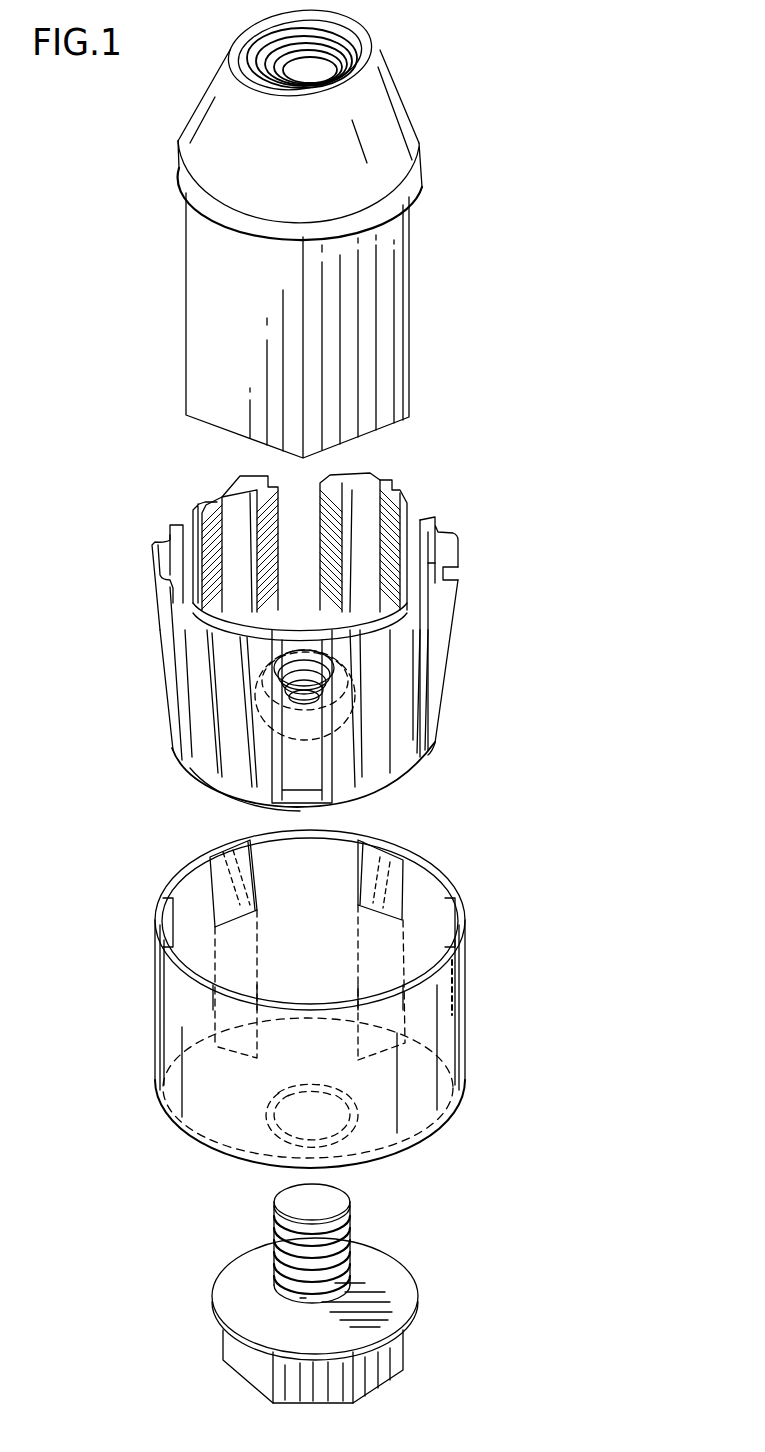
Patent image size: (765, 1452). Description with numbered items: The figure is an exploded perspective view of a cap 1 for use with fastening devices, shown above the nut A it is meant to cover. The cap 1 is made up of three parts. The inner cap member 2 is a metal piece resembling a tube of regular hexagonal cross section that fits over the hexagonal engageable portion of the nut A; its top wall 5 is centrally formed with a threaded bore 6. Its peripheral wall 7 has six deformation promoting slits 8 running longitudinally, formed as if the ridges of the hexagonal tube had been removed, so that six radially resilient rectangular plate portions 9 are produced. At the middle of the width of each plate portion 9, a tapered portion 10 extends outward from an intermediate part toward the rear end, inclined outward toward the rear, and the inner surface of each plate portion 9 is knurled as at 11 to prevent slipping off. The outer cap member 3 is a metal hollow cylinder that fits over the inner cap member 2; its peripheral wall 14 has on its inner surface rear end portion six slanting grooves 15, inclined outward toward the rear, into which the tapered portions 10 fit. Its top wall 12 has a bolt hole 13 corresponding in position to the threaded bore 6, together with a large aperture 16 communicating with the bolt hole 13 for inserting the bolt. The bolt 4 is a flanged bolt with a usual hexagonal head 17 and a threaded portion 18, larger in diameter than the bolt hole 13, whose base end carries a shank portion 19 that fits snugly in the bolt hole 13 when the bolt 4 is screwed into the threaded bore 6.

The cap 1 is at (553, 818).
The nut A is at (409, 253).
The inner cap member 2 is at (438, 690).
The outer cap member 3 is at (463, 1057).
The bolt 4 is at (405, 1329).
The top wall 5 is at (415, 742).
The threaded bore 6 is at (305, 660).
The peripheral wall 7 is at (452, 623).
The deformation promoting slits 8 is at (415, 527).
The rectangular plate portions 9 is at (438, 525).
The tapered portion 10 is at (447, 586).
The knurled portion 11 is at (207, 523).
The top wall 12 is at (437, 1125).
The bolt hole 13 is at (250, 1147).
The peripheral wall 14 is at (450, 1015).
The slanting grooves 15 is at (393, 882).
The large aperture 16 is at (343, 1135).
The hexagonal head 17 is at (380, 1360).
The threaded portion 18 is at (350, 1227).
The shank portion 19 is at (345, 1290).